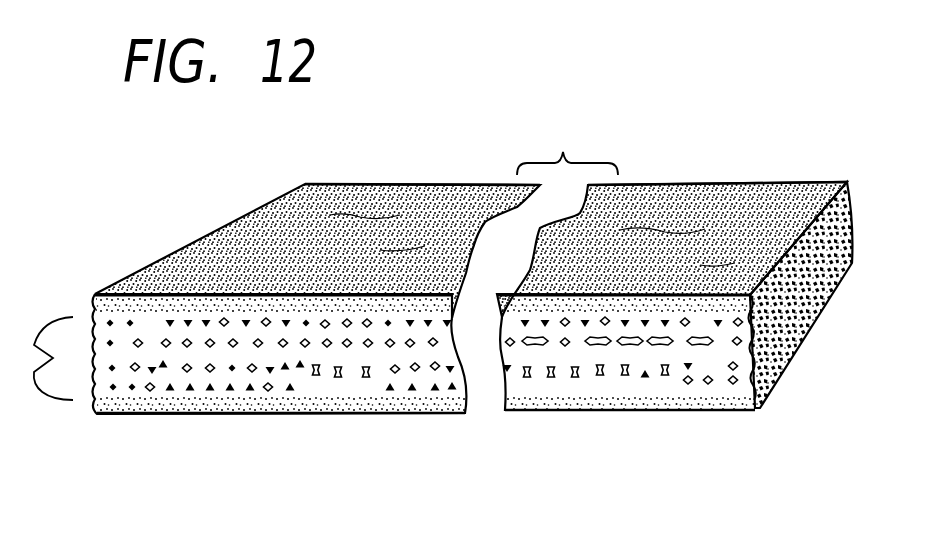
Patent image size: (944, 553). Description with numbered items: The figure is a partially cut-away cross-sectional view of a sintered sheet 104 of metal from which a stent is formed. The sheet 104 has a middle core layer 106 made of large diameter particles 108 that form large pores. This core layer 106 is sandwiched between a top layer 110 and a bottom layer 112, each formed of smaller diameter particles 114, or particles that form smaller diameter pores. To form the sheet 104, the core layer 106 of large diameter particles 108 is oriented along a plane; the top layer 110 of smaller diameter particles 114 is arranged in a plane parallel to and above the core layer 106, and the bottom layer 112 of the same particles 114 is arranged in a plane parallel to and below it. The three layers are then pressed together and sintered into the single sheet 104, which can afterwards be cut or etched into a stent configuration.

The sintered sheet 104 is at (168, 448).
The middle core layer 106 is at (32, 338).
The large diameter particles 108 is at (153, 352).
The top layer 110 is at (96, 293).
The bottom layer 112 is at (100, 414).
The smaller diameter particles 114 is at (358, 312).